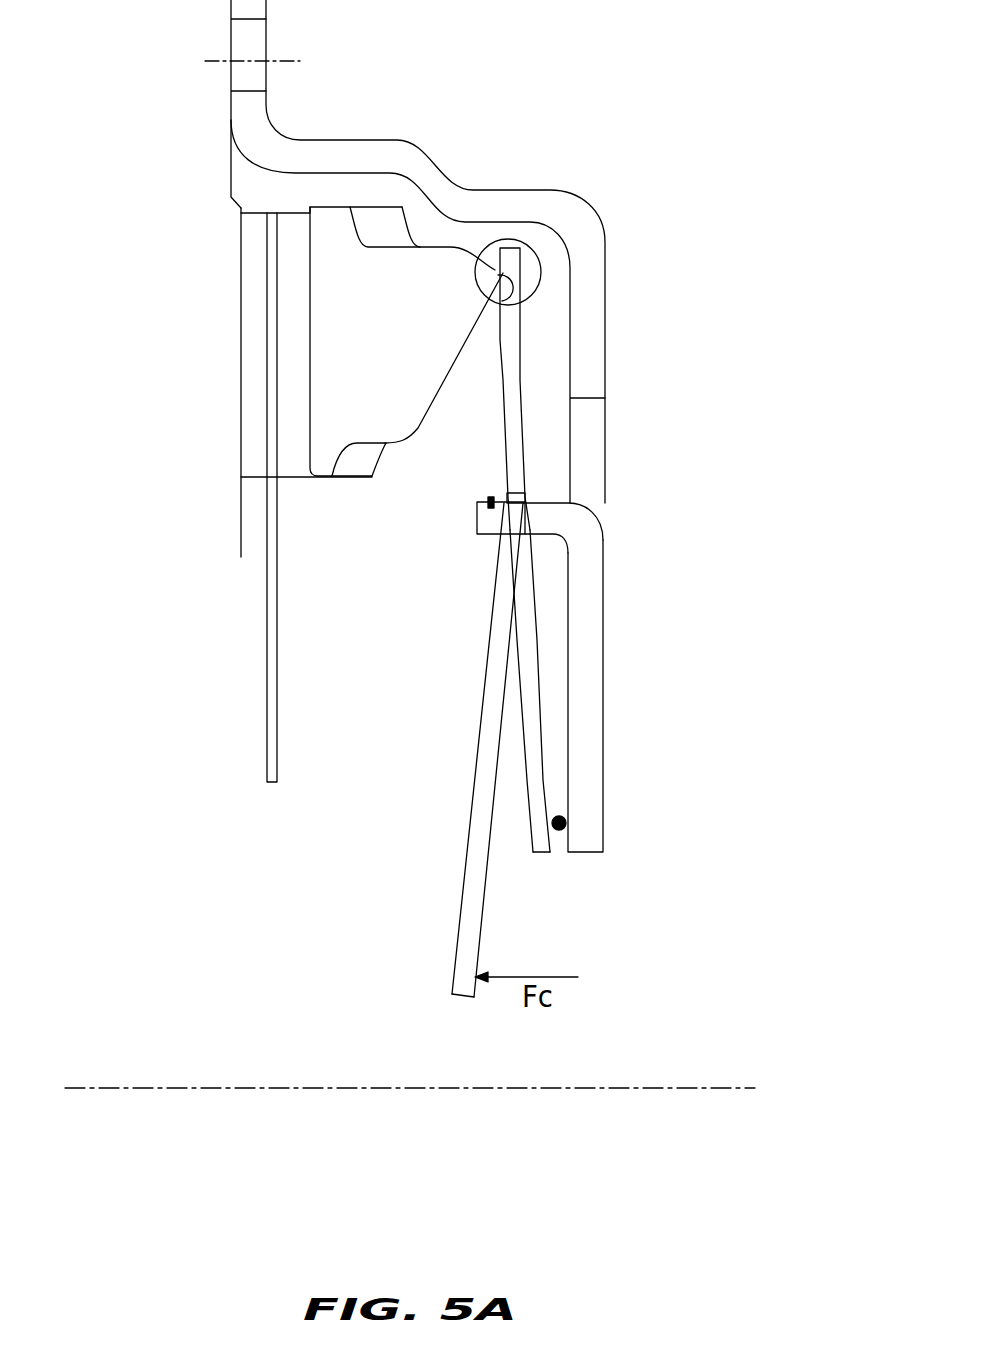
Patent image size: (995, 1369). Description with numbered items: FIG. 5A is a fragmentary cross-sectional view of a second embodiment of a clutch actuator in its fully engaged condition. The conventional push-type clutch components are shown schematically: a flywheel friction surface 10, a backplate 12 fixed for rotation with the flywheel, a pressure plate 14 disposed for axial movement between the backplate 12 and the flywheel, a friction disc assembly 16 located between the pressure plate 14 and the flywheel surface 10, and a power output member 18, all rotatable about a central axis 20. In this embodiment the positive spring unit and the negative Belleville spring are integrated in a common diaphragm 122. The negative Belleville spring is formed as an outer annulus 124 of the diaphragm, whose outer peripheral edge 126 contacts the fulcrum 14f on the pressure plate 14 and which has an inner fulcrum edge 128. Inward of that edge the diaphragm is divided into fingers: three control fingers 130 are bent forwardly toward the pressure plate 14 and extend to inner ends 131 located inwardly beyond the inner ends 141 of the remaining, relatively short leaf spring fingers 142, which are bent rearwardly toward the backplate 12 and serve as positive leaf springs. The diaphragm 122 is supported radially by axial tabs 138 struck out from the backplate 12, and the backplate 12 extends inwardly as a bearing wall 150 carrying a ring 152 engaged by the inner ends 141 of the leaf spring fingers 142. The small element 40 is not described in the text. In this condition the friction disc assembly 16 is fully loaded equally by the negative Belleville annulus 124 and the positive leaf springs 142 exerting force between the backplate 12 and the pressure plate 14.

The flywheel friction surface 10 is at (242, 528).
The backplate 12 is at (490, 205).
The pressure plate 14 is at (386, 353).
The fulcrum 14f is at (502, 299).
The friction disc assembly 16 is at (245, 384).
The power output member 18 is at (272, 730).
The central axis 20 is at (653, 1088).
The pin 40 is at (491, 500).
The diaphragm 122 is at (451, 784).
The outer annulus 124 is at (512, 347).
The outer peripheral edge 126 is at (527, 243).
The inner fulcrum edge 128 is at (535, 503).
The control fingers 130 is at (482, 770).
The inner ends 131 is at (452, 998).
The axial tabs 138 is at (492, 523).
The inner ends 141 is at (537, 853).
The leaf spring fingers 142 is at (527, 745).
The bearing wall 150 is at (583, 655).
The ring 152 is at (563, 830).